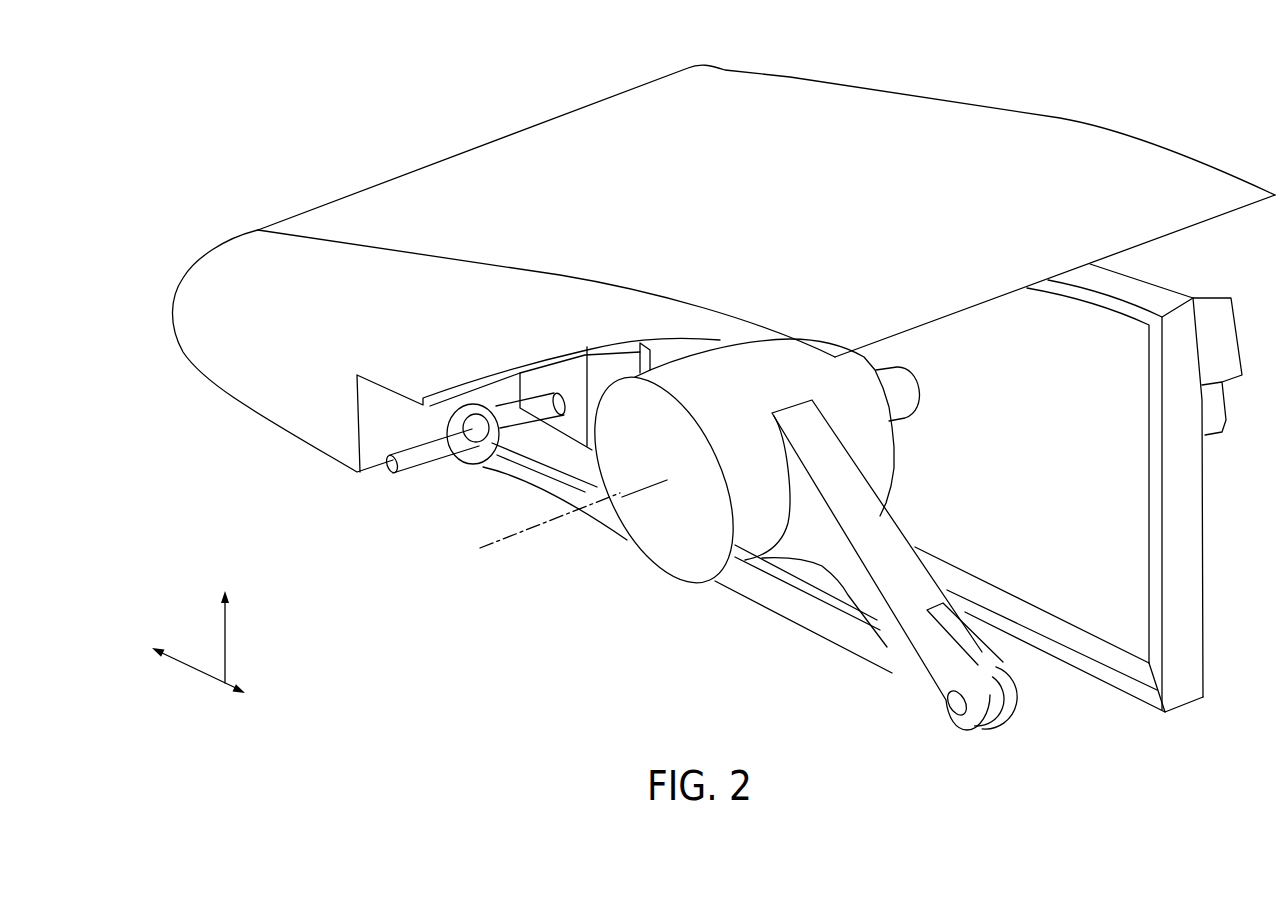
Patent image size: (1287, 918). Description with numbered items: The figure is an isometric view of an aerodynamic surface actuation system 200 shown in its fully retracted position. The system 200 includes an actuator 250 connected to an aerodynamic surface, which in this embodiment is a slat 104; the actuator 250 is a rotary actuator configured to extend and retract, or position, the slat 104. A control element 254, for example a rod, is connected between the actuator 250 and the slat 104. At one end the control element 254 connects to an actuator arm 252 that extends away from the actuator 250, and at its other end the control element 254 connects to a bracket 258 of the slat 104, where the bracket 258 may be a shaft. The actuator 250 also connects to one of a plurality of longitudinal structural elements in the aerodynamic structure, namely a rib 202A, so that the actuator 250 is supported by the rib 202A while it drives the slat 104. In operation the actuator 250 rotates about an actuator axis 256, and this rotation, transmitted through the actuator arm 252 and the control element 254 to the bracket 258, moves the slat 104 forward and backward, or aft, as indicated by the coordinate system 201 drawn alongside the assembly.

The slat 104 is at (480, 158).
The aerodynamic surface actuation system 200 is at (240, 60).
The coordinate system 201 is at (185, 600).
The rib 202A is at (1097, 673).
The actuator 250 is at (672, 560).
The actuator arm 252 is at (923, 657).
The control element 254 is at (803, 607).
The actuator axis 256 is at (513, 540).
The bracket 258 is at (432, 452).